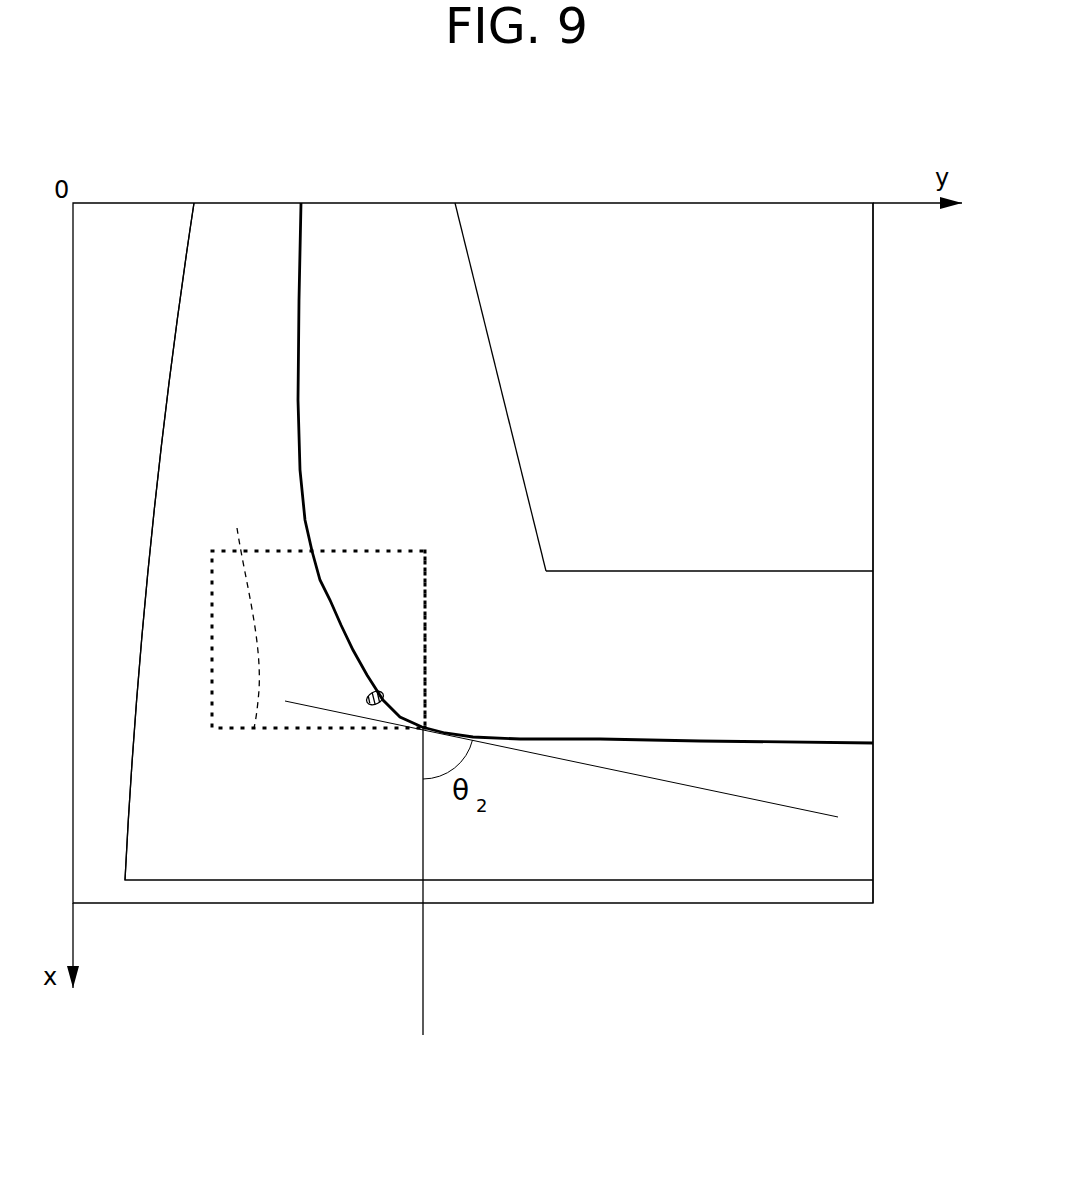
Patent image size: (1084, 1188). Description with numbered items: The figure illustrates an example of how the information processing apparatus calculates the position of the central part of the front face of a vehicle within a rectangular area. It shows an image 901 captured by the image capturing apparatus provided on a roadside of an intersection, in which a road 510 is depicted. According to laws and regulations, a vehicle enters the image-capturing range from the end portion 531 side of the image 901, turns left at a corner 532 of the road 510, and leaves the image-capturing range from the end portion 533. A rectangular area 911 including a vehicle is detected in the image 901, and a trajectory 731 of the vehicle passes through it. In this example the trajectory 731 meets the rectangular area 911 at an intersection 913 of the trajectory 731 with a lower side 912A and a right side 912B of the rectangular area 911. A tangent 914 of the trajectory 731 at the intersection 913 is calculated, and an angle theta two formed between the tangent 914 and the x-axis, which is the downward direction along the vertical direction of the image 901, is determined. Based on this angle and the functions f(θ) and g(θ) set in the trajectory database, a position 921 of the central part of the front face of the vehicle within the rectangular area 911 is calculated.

The image 901 is at (585, 203).
The end portion 531 is at (232, 203).
The road 510 is at (485, 318).
The corner 532 is at (548, 571).
The end portion 533 is at (873, 664).
The trajectory 731 is at (589, 738).
The rectangular area 911 is at (385, 551).
The lower side 912A is at (245, 612).
The right side 912B is at (425, 612).
The intersection 913 is at (428, 727).
The position of central part of front face of vehicle 921 is at (377, 692).
The tangent 914 is at (785, 806).